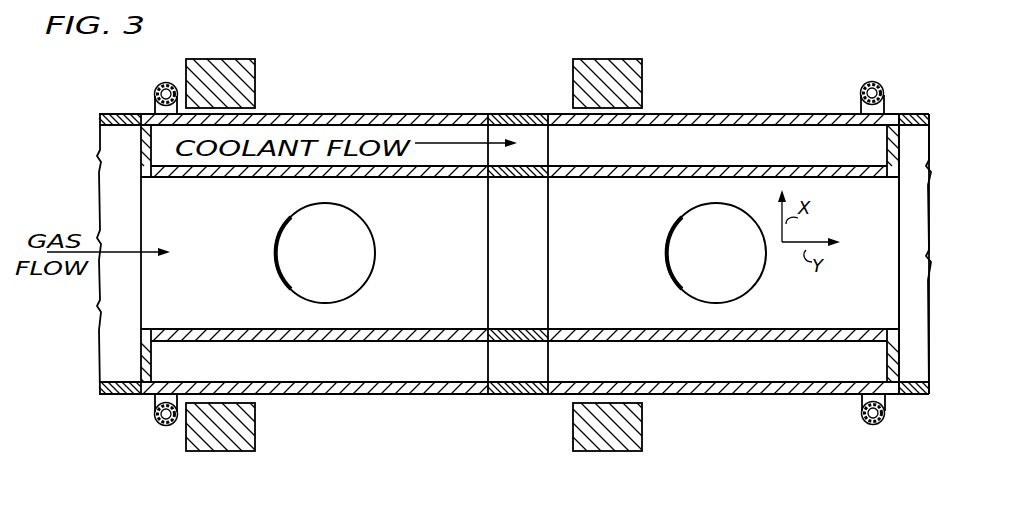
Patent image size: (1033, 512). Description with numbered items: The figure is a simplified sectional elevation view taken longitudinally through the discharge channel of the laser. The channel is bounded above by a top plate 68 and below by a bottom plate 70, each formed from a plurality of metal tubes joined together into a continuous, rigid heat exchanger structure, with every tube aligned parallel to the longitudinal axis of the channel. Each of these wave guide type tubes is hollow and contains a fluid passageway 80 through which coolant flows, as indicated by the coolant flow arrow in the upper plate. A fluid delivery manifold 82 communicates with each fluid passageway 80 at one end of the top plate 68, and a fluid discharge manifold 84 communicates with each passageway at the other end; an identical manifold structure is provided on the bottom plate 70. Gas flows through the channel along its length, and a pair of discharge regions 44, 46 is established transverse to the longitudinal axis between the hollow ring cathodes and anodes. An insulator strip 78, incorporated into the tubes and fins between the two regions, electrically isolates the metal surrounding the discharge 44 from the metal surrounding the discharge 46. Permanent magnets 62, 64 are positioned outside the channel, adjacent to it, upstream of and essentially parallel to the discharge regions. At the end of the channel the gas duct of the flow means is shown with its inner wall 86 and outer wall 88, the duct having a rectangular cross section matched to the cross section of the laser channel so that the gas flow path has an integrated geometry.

The discharge region 44 is at (328, 262).
The discharge region 46 is at (719, 262).
The permanent magnet 62 is at (248, 73).
The permanent magnet 64 is at (222, 452).
The top plate 68 is at (740, 108).
The bottom plate 70 is at (765, 398).
The insulator strip 78 is at (521, 262).
The fluid passageway 80 is at (659, 156).
The fluid delivery manifold 82 is at (155, 86).
The fluid discharge manifold 84 is at (882, 87).
The inner wall 86 is at (915, 394).
The outer wall 88 is at (910, 114).